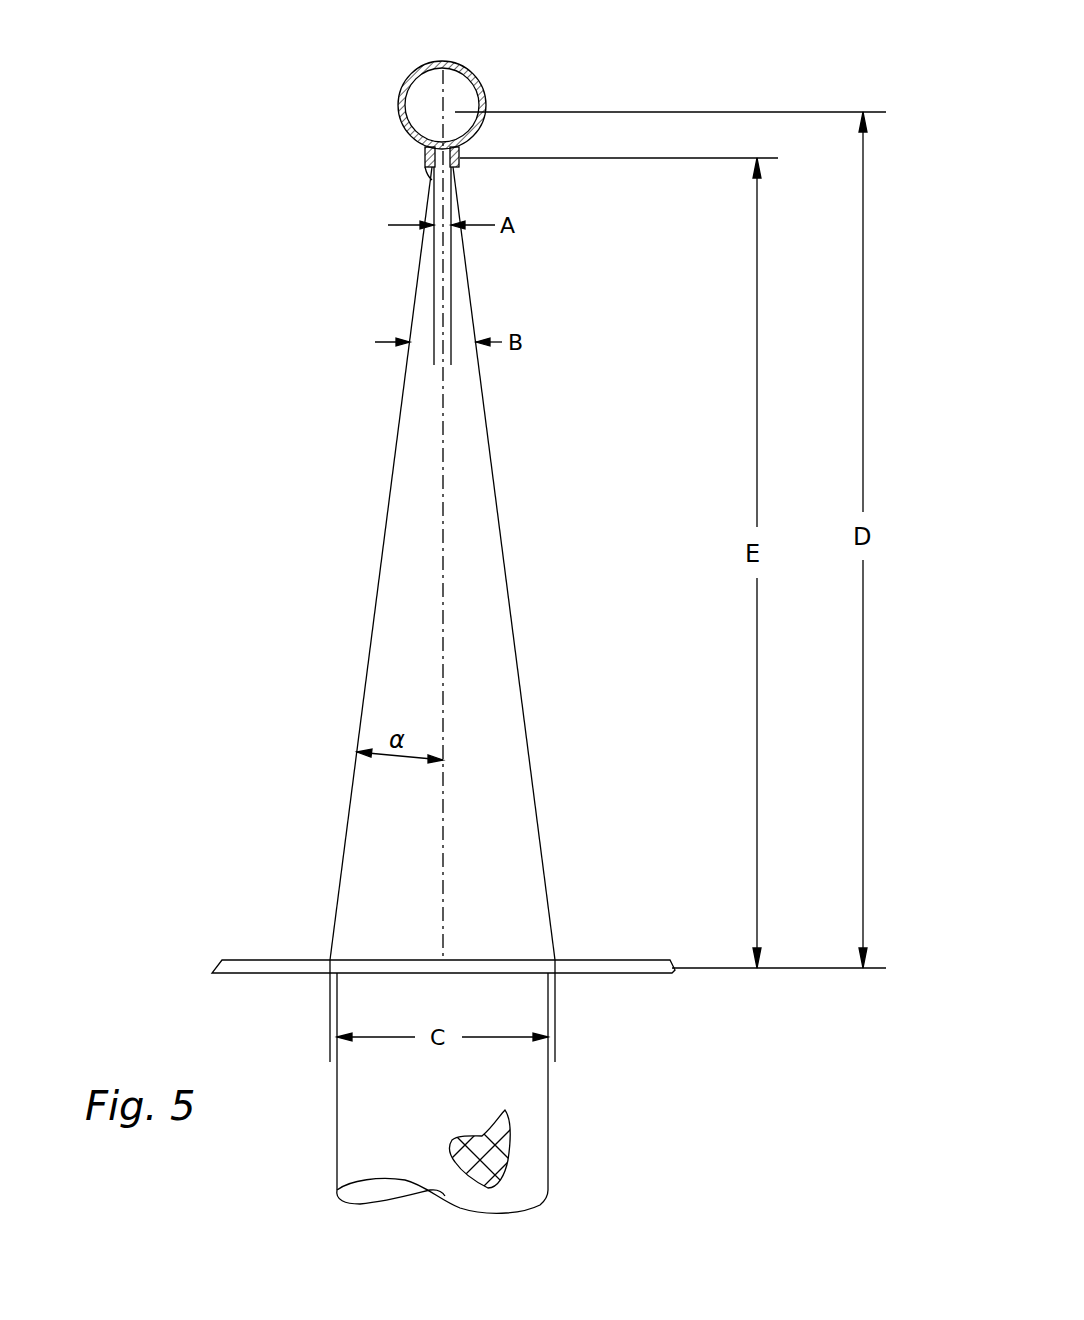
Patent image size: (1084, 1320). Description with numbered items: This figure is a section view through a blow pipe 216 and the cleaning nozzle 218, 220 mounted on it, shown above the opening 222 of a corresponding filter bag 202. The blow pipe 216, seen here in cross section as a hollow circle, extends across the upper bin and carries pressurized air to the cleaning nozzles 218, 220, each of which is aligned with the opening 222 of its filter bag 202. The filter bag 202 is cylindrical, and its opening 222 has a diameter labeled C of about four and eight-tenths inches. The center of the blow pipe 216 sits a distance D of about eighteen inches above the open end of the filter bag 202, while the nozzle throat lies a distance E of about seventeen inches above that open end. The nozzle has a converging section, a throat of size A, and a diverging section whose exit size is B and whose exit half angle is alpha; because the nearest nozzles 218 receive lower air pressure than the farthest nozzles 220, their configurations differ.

The blow pipe 216 is at (480, 76).
The nearest nozzles 218 is at (360, 163).
The farthest nozzles 220 is at (425, 158).
The opening 222 is at (508, 947).
The filter bag 202 is at (540, 1166).